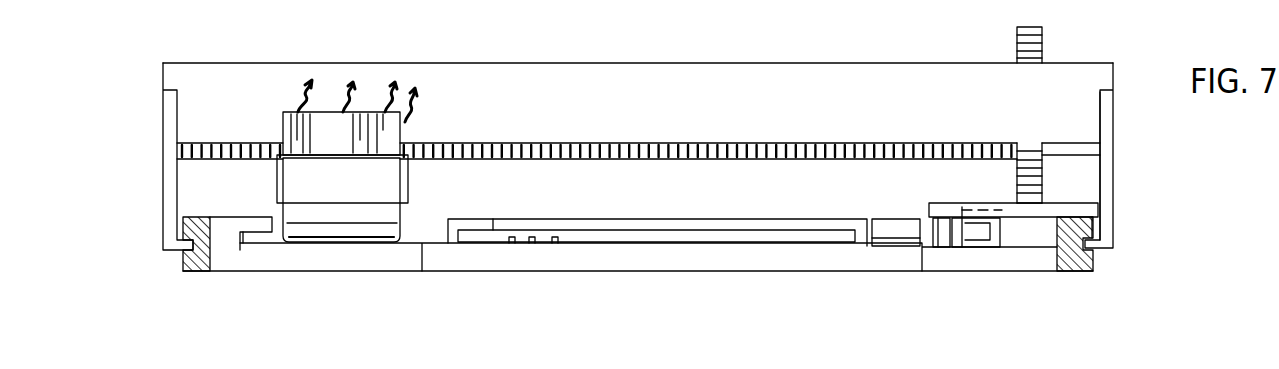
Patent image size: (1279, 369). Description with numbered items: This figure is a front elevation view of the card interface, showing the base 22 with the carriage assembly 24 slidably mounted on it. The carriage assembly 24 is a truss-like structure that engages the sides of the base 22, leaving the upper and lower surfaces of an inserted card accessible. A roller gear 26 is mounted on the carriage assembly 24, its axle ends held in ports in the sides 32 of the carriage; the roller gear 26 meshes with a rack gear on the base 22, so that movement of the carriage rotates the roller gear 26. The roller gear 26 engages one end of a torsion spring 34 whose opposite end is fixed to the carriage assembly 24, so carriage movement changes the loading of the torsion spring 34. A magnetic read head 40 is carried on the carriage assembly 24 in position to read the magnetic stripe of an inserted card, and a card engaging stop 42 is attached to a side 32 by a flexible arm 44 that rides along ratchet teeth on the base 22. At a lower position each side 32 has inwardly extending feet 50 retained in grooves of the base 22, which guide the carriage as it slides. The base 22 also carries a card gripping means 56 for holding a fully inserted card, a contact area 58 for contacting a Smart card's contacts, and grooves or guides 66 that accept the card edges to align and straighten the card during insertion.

The base 22 is at (1035, 263).
The carriage assembly 24 is at (1098, 75).
The roller gear 26 is at (1017, 36).
The sides 32 is at (1113, 158).
The torsion spring 34 is at (525, 142).
The magnetic read head 40 is at (323, 133).
The stop 42 is at (938, 235).
The flexible arm 44 is at (1075, 205).
The feet 50 is at (1093, 245).
The card gripping means 56 is at (895, 228).
The contact area 58 is at (545, 233).
The grooves or guides 66 is at (242, 244).